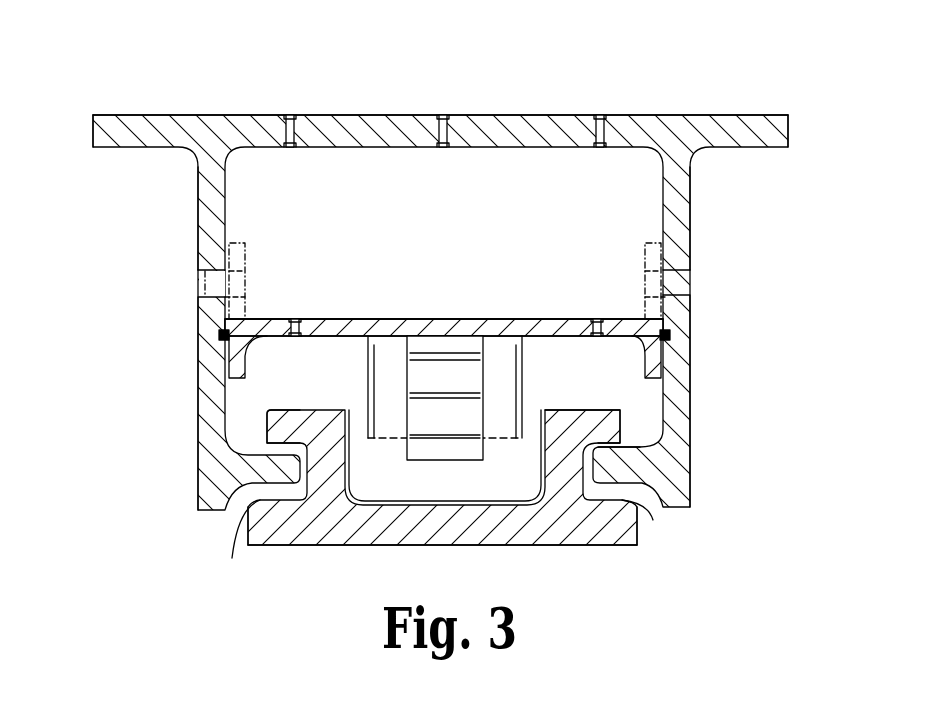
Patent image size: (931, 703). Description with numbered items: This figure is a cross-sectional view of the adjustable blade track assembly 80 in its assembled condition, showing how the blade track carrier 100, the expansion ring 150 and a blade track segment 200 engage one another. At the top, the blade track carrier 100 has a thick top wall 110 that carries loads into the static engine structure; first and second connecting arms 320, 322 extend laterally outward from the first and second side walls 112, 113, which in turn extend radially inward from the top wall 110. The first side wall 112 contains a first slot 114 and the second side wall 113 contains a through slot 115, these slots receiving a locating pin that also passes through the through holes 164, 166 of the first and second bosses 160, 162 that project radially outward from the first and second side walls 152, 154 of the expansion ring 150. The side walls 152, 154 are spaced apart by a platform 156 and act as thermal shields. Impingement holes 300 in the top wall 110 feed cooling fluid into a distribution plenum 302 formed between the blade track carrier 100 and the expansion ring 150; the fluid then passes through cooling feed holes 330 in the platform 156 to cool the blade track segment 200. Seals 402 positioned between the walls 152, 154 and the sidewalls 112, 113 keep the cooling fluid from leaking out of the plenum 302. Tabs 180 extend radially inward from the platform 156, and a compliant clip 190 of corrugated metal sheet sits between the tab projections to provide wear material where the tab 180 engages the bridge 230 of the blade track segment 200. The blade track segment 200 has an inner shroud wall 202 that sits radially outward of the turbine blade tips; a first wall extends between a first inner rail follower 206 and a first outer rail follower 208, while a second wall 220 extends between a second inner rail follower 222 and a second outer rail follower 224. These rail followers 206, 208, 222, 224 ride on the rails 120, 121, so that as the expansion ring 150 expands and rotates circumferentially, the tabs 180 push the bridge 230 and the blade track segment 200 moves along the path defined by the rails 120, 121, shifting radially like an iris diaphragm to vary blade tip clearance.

The adjustable blade track assembly 80 is at (82, 527).
The blade track carrier 100 is at (689, 46).
The top wall 110 is at (213, 115).
The first side wall 112 is at (198, 198).
The second side wall 113 is at (692, 187).
The first slot 114 is at (200, 285).
The through slot 115 is at (692, 283).
The rail 120 is at (247, 503).
The rail 121 is at (598, 455).
The expansion ring 150 is at (494, 298).
The first side wall 152 is at (230, 356).
The second side wall 154 is at (663, 362).
The platform 156 is at (398, 318).
The first boss 160 is at (240, 243).
The second boss 162 is at (650, 243).
The through hole 164 is at (246, 282).
The through hole 166 is at (644, 282).
The tab 180 is at (375, 367).
The compliant clip 190 is at (440, 372).
The blade track segment 200 is at (592, 552).
The inner shroud wall 202 is at (318, 546).
The first inner rail follower 206 is at (250, 530).
The first outer rail follower 208 is at (268, 428).
The second wall 220 is at (655, 517).
The second inner rail follower 222 is at (637, 537).
The second outer rail follower 224 is at (600, 428).
The bridge 230 is at (432, 490).
The impingement hole 300 is at (600, 115).
The distribution plenum 302 is at (522, 194).
The first connecting arm 320 is at (100, 130).
The second connecting arm 322 is at (788, 127).
The cooling feed hole 330 is at (597, 319).
The seal 402 is at (670, 335).